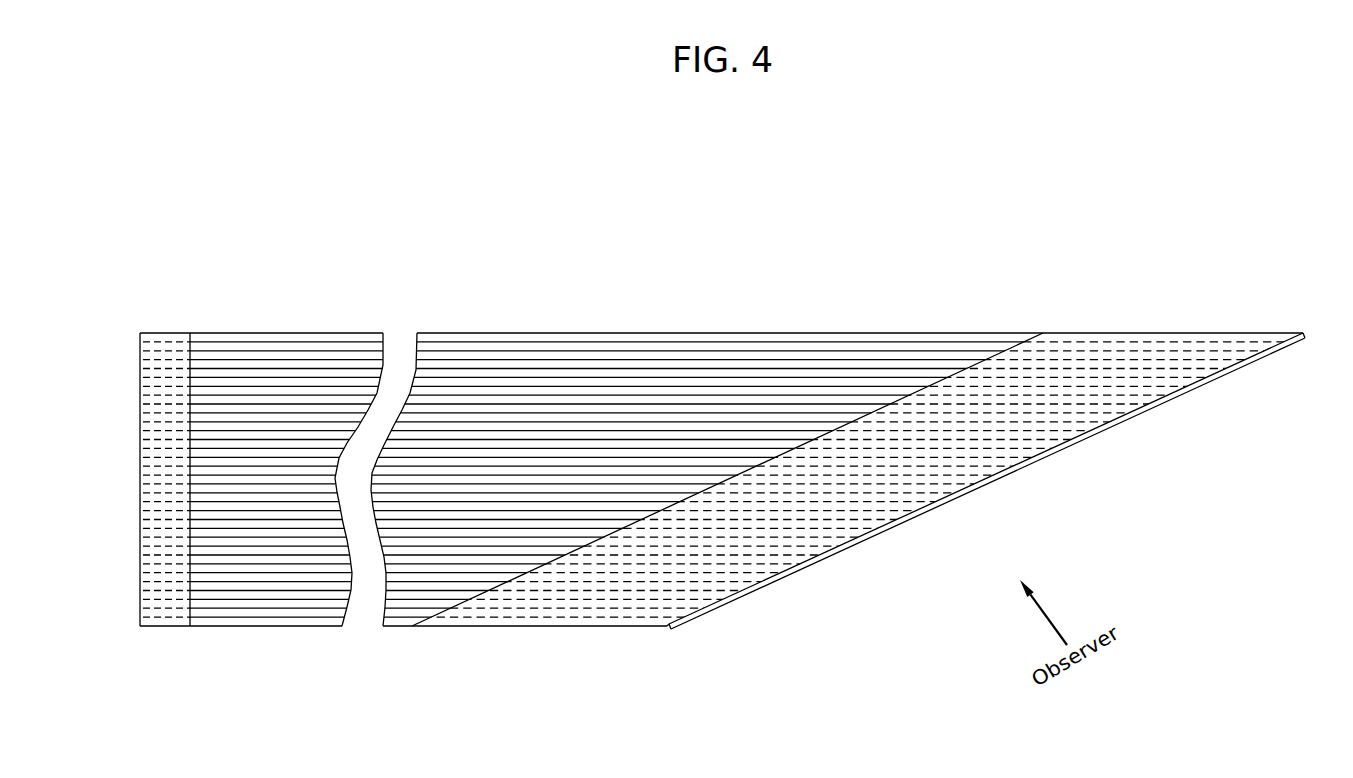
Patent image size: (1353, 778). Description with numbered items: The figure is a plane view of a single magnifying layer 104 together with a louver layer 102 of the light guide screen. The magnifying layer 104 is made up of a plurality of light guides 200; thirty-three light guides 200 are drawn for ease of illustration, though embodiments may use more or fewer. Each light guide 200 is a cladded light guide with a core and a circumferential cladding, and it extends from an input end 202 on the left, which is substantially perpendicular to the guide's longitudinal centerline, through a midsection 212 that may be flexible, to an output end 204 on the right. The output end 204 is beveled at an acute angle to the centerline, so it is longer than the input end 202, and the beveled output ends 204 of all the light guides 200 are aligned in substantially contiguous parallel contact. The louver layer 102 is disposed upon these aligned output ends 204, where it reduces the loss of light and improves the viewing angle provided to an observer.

The louver layer 102 is at (701, 636).
The magnifying layer 104 is at (869, 228).
The light guide 200 is at (772, 313).
The input end 202 is at (139, 333).
The output end 204 is at (1292, 340).
The midsection 212 is at (520, 332).